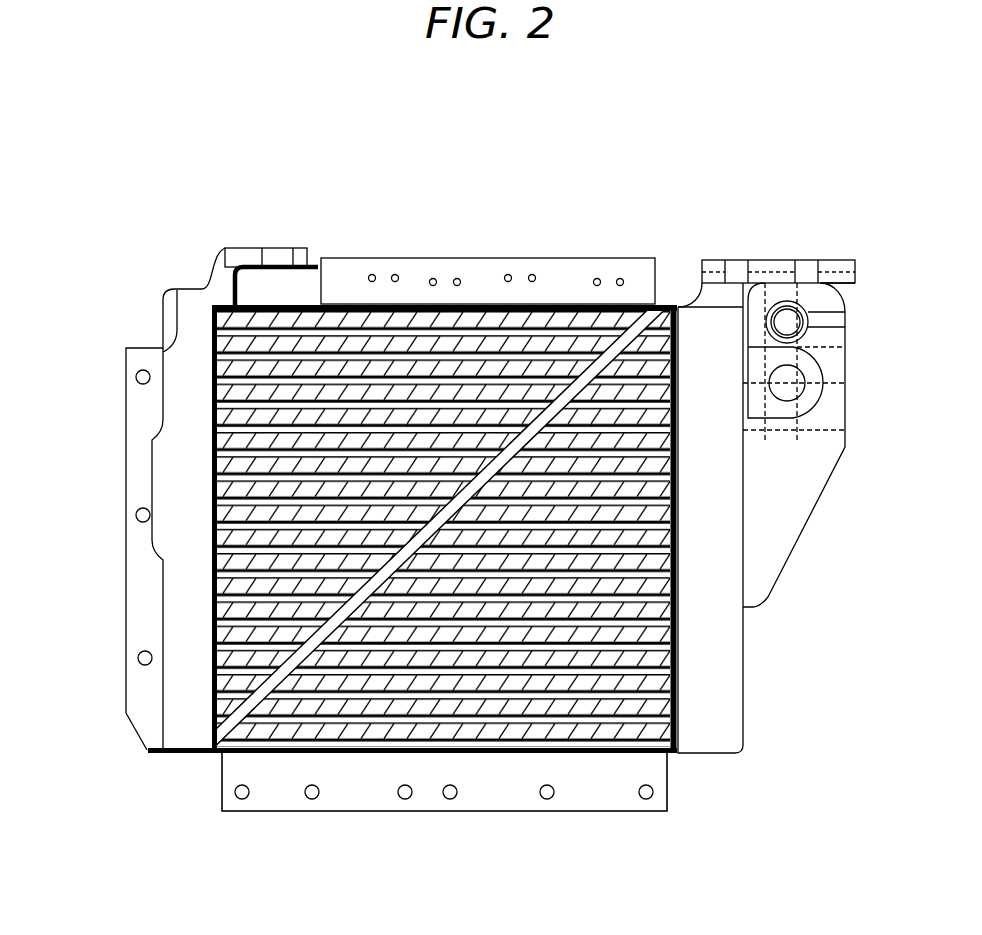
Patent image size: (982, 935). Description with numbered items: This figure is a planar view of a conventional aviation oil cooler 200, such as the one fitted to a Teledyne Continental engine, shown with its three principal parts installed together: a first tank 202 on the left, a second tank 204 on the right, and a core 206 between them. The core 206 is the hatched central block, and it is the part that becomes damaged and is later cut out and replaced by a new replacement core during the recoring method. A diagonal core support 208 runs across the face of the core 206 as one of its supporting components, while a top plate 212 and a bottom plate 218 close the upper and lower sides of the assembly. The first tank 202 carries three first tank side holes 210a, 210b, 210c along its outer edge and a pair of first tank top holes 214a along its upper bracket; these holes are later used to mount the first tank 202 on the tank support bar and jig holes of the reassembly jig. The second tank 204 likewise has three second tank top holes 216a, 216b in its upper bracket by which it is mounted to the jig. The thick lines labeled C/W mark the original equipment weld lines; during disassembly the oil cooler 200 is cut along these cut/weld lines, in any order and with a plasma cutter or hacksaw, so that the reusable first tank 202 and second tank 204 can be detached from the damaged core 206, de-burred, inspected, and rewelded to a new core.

The aviation oil cooler 200 is at (832, 108).
The first tank 202 is at (140, 561).
The second tank 204 is at (718, 680).
The core 206 is at (464, 392).
The core support 208 is at (247, 713).
The first tank side hole 210a is at (136, 377).
The first tank side hole 210b is at (136, 515).
The first tank side hole 210c is at (138, 658).
The top plate 212 is at (567, 272).
The first tank top hole 214a is at (273, 231).
The second tank top hole 216a is at (767, 405).
The second tank top hole 216b is at (830, 262).
The bottom plate 218 is at (495, 797).